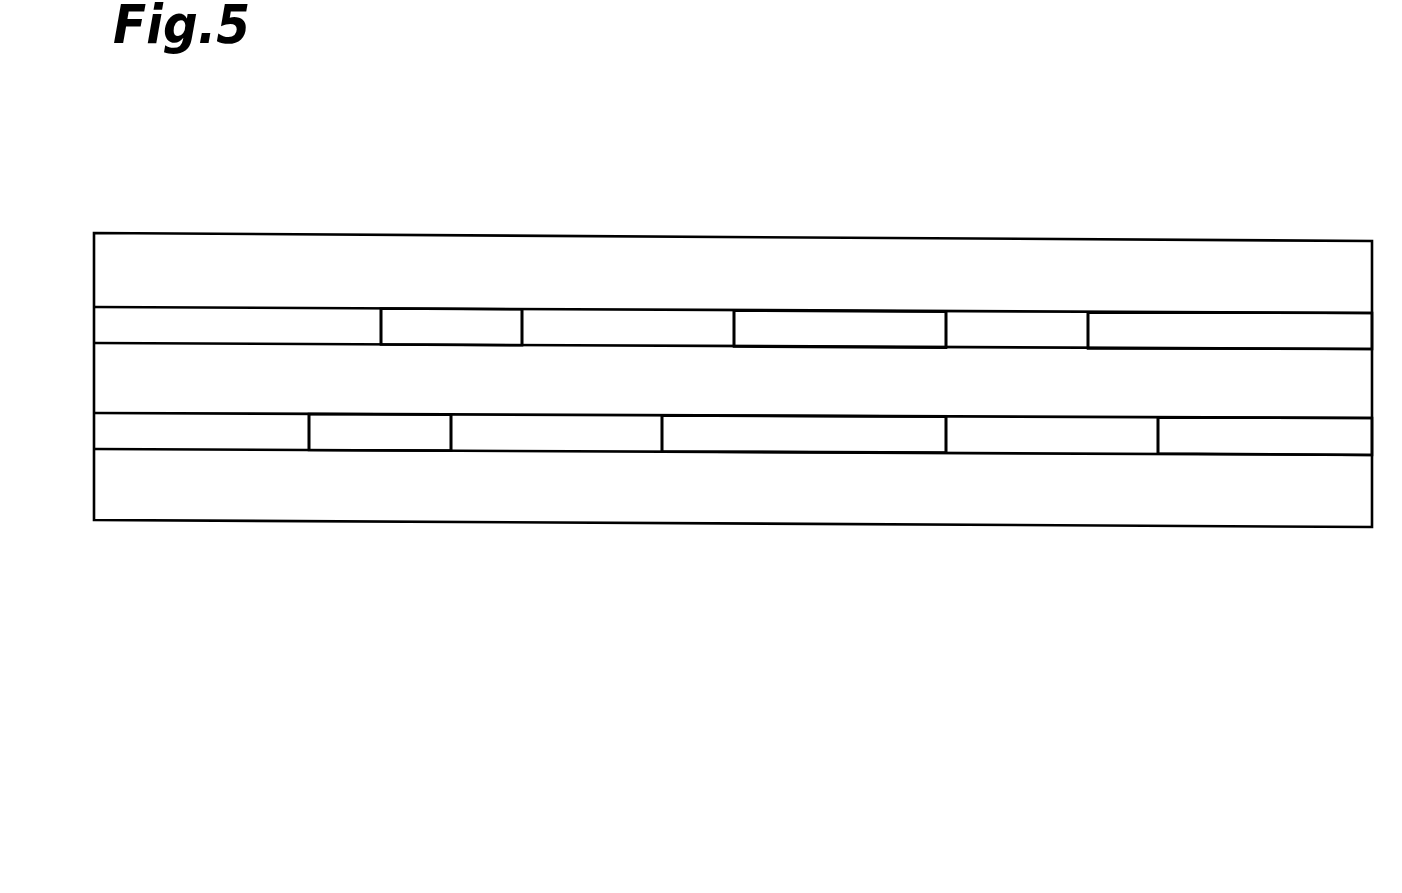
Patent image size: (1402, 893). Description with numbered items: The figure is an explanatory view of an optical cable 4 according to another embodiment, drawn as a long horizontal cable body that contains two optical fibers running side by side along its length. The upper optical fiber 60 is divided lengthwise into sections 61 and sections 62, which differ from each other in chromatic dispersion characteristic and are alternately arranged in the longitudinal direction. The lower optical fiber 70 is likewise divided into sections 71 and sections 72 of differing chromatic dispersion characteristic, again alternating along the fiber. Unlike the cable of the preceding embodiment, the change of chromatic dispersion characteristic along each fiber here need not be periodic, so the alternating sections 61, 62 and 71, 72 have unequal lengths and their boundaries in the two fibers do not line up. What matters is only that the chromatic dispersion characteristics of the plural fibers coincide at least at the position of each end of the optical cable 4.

The optical cable 4 is at (940, 238).
The optical fiber 60 is at (718, 310).
The section 61 is at (179, 313).
The section 62 is at (437, 315).
The optical fiber 70 is at (723, 453).
The section 71 is at (181, 442).
The section 72 is at (394, 442).